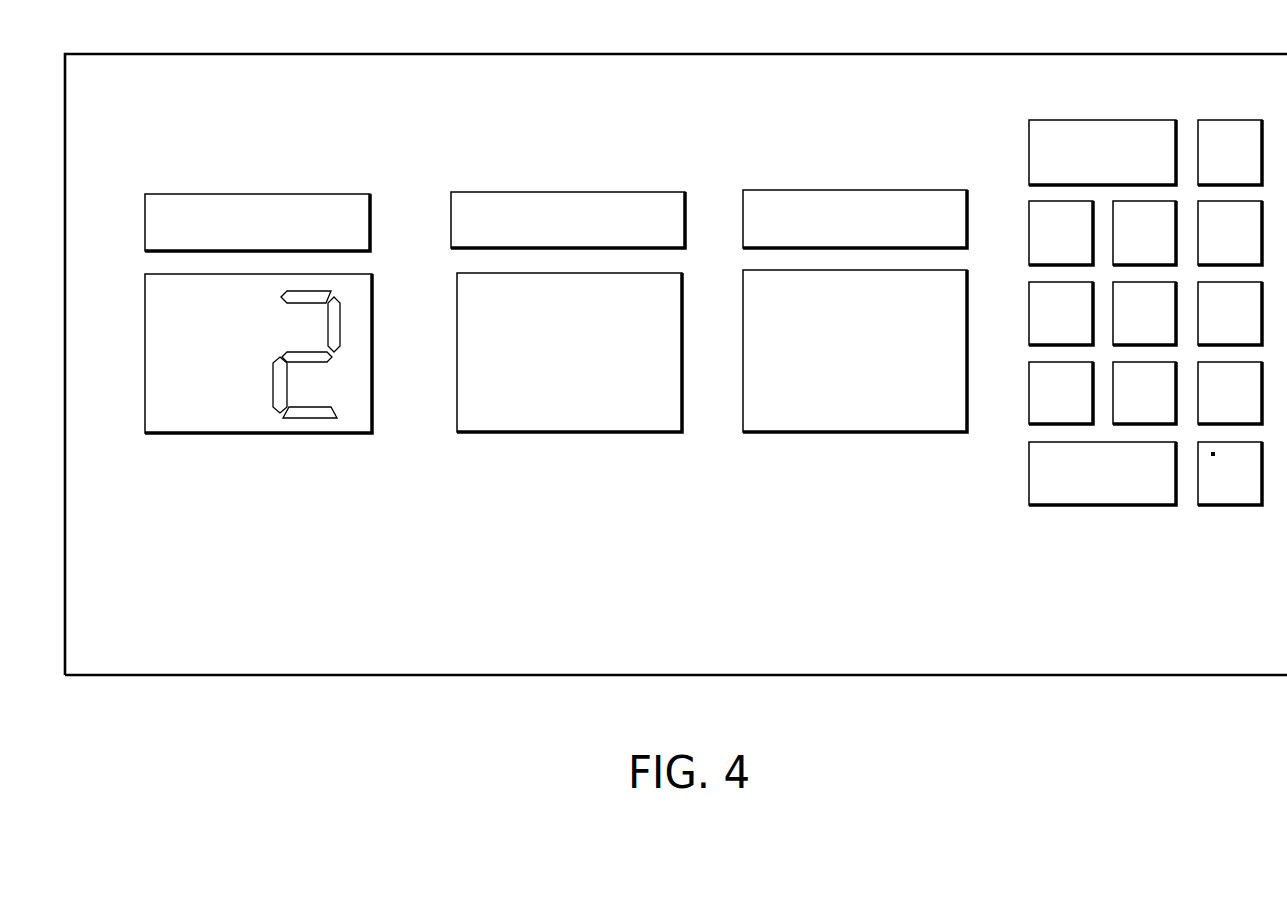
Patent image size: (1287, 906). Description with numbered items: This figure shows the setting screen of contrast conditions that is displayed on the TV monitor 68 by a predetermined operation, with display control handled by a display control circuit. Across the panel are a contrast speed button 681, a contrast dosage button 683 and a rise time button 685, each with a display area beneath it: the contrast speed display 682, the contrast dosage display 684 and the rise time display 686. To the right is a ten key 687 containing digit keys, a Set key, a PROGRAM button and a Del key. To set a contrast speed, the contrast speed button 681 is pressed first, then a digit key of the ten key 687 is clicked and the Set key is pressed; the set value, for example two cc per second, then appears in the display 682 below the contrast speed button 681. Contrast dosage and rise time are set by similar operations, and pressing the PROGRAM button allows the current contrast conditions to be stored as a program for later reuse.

The TV monitor 68 is at (547, 677).
The contrast speed button 681 is at (194, 193).
The contrast speed display 682 is at (169, 435).
The contrast dosage label 683 is at (488, 189).
The contrast dosage display 684 is at (497, 435).
The rise time label 685 is at (774, 189).
The rise time display 686 is at (792, 435).
The ten key 687 is at (1000, 486).